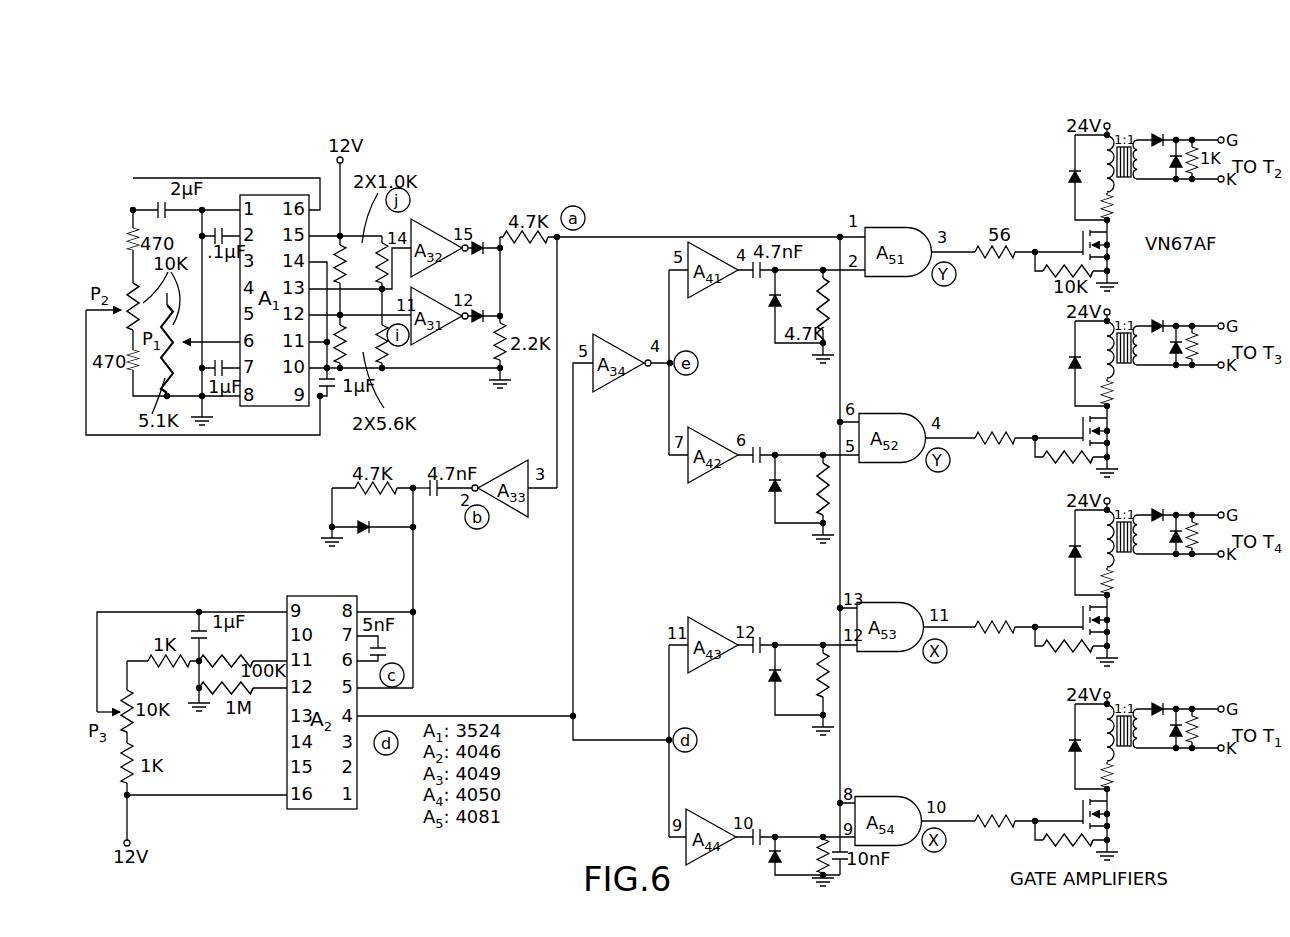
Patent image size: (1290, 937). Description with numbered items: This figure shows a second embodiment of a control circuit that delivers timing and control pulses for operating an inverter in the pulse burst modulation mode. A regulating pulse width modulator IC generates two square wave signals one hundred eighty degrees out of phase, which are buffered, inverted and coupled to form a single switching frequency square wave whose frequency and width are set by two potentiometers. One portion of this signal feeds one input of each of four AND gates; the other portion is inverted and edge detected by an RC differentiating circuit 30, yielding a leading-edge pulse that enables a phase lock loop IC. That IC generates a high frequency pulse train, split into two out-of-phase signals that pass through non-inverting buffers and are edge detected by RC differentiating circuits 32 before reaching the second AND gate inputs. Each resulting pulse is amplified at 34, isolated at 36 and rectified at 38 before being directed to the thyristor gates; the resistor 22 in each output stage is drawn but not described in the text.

The primary current limiting resistor 22 is at (1119, 488).
The RC differentiating circuit 30 is at (420, 476).
The RC differentiating circuits 32 is at (764, 288).
The amplifier 34 is at (1030, 281).
The isolator 36 is at (1147, 137).
The rectifier 38 is at (1196, 137).